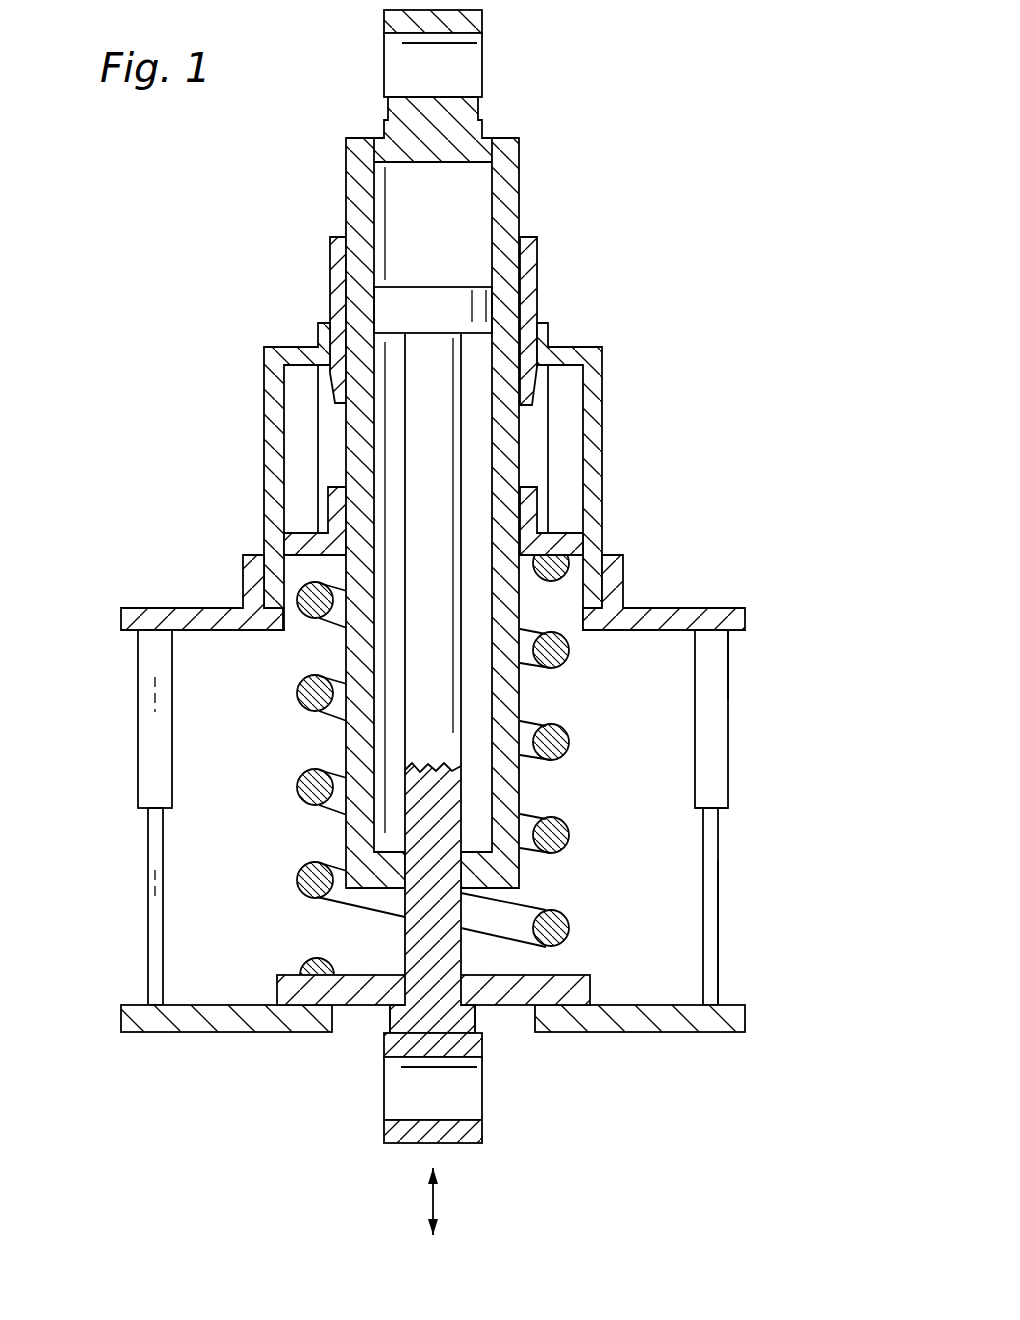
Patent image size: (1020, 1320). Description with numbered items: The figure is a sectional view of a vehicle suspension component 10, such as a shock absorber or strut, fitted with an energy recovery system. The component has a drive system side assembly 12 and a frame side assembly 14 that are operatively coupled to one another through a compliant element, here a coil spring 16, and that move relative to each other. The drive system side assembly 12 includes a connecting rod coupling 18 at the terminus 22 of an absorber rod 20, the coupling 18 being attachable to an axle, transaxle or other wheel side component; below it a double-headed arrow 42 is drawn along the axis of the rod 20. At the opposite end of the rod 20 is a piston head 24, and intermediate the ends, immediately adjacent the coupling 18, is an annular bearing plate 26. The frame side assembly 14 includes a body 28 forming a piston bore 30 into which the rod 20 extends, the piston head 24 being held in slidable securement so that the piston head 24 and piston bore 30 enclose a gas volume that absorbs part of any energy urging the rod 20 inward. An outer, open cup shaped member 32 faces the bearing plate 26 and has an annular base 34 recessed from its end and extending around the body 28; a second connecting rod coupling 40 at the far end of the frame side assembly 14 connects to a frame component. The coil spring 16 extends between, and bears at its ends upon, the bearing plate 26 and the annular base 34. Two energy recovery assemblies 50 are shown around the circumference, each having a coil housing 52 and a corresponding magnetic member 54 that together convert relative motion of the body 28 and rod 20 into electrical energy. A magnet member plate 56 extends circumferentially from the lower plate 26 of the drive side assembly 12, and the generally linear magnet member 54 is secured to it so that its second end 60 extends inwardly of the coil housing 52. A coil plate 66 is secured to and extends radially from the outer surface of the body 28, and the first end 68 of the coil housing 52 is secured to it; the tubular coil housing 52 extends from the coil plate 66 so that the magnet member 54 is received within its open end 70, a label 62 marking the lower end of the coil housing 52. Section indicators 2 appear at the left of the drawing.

The section line 2 is at (155, 677).
The vehicle suspension component 10 is at (652, 44).
The drive system side assembly 12 is at (315, 1060).
The frame side assembly 14 is at (538, 268).
The coil spring 16 is at (568, 742).
The connecting rod coupling 18 is at (473, 1090).
The absorber rod 20 is at (405, 940).
The terminus 22 is at (475, 1018).
The piston head 24 is at (423, 300).
The annular bearing plate 26 is at (573, 975).
The body 28 is at (512, 207).
The piston bore 30 is at (475, 787).
The cup shaped member 32 is at (603, 425).
The annular base 34 is at (548, 533).
The second connecting rod coupling 40 is at (392, 60).
The direction of movement 42 is at (433, 1200).
The energy recovery assembly 50 is at (757, 745).
The coil housing 52 is at (728, 700).
The magnetic member 54 is at (718, 905).
The magnet member plate 56 is at (745, 1015).
The second end 60 is at (718, 828).
The shoulder 62 is at (728, 798).
The coil plate 66 is at (722, 608).
The first end 68 is at (728, 645).
The open end 70 is at (700, 810).